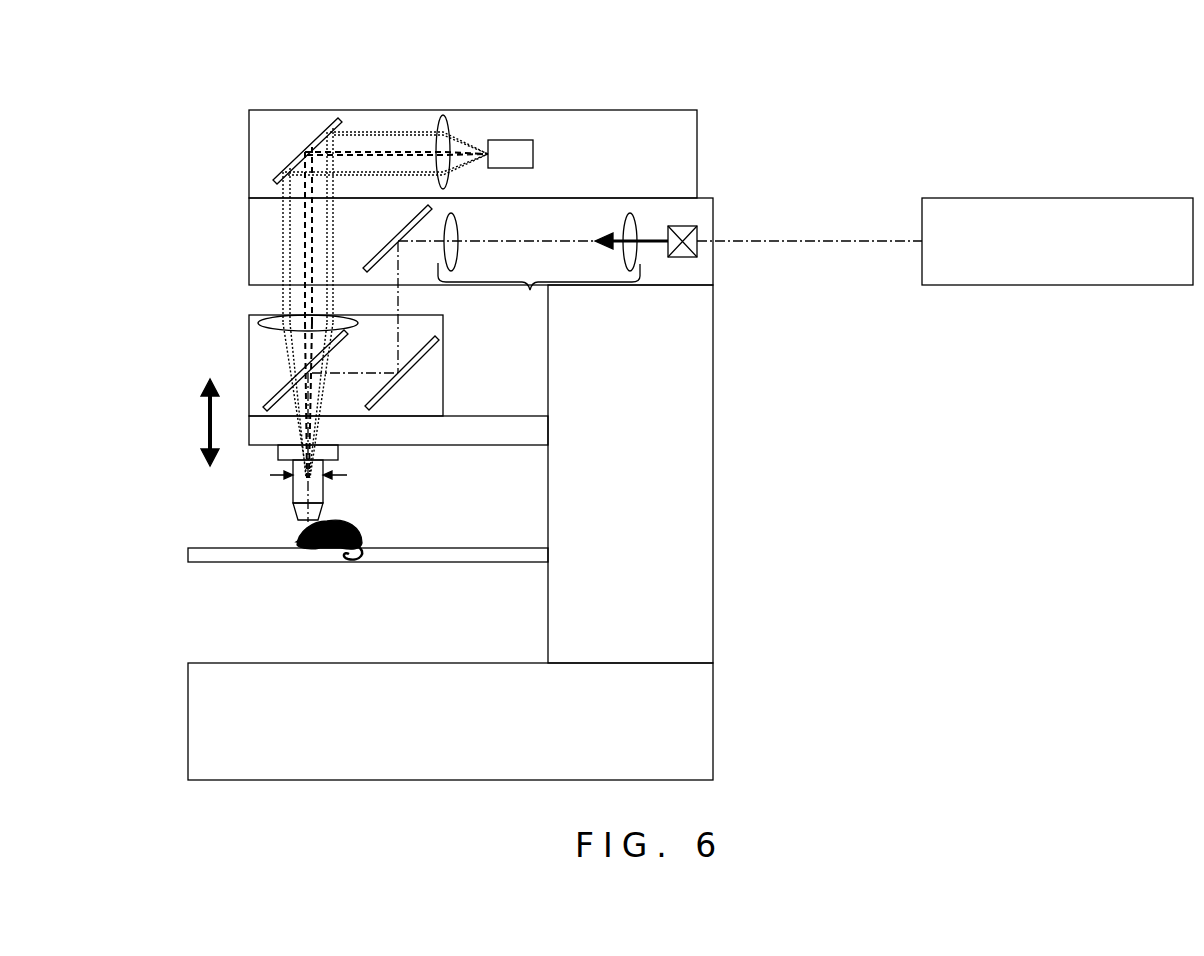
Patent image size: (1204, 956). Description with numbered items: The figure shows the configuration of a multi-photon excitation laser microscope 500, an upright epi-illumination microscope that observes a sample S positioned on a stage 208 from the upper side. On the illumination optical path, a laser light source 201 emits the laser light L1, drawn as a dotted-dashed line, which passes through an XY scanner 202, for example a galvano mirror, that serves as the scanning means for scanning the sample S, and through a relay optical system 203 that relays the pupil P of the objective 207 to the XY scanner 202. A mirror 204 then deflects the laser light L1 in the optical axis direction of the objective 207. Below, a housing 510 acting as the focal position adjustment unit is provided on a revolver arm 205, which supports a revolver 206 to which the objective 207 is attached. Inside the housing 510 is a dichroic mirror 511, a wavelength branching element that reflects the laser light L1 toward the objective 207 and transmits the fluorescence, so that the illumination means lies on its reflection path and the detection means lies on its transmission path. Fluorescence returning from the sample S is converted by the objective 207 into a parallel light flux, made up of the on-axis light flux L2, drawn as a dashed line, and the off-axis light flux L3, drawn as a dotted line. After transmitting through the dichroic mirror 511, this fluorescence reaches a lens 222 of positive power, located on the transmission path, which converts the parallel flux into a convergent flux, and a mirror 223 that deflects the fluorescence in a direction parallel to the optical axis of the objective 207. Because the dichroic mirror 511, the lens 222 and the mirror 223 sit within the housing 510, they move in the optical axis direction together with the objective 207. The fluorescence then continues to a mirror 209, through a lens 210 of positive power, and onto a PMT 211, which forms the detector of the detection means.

The multi-photon excitation laser microscope 500 is at (1188, 144).
The laser light source 201 is at (1012, 198).
The laser light L1 is at (812, 241).
The XY scanner 202 is at (693, 226).
The relay optical system 203 is at (539, 265).
The mirror 204 is at (387, 257).
The mirror 209 is at (313, 142).
The on-axis light flux L2 is at (311, 223).
The off-axis light flux L3 is at (291, 268).
The lens 210 is at (443, 115).
The PMT 211 is at (505, 140).
The housing 510 is at (249, 347).
The lens 222 is at (258, 320).
The dichroic mirror 511 is at (279, 389).
The mirror 223 is at (427, 357).
The revolver arm 205 is at (249, 443).
The revolver 206 is at (273, 450).
The objective 207 is at (291, 492).
The pupil P is at (341, 475).
The sample S is at (360, 526).
The stage 208 is at (188, 562).